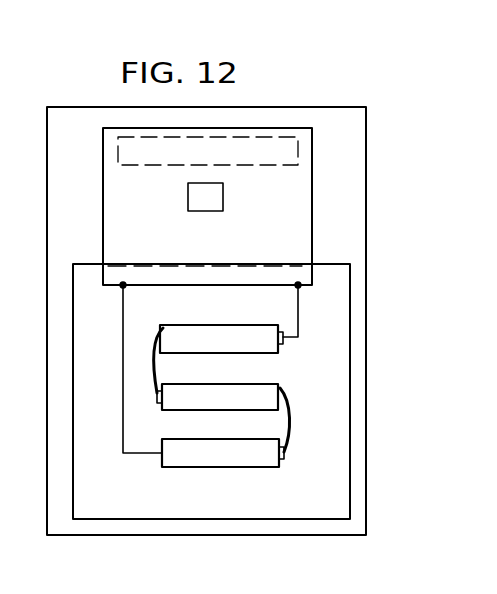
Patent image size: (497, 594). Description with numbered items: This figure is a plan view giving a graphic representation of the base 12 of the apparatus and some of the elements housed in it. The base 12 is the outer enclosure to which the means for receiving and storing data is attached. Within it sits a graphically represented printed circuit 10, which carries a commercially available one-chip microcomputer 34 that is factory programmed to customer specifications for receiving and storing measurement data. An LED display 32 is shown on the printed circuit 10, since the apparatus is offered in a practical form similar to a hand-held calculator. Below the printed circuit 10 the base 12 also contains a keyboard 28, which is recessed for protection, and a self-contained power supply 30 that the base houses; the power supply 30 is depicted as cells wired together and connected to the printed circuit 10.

The printed circuit 10 is at (316, 192).
The base 12 is at (369, 134).
The keyboard 28 is at (354, 368).
The self-contained power supply 30 is at (235, 467).
The LED display 32 is at (259, 130).
The one-chip microcomputer 34 is at (187, 202).